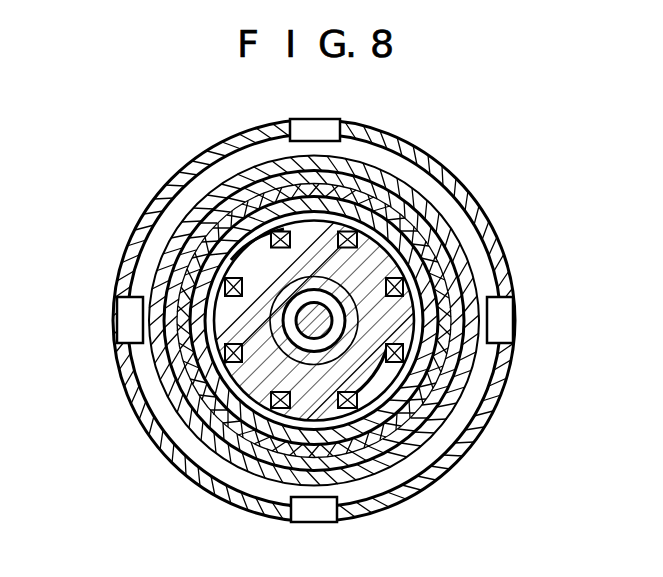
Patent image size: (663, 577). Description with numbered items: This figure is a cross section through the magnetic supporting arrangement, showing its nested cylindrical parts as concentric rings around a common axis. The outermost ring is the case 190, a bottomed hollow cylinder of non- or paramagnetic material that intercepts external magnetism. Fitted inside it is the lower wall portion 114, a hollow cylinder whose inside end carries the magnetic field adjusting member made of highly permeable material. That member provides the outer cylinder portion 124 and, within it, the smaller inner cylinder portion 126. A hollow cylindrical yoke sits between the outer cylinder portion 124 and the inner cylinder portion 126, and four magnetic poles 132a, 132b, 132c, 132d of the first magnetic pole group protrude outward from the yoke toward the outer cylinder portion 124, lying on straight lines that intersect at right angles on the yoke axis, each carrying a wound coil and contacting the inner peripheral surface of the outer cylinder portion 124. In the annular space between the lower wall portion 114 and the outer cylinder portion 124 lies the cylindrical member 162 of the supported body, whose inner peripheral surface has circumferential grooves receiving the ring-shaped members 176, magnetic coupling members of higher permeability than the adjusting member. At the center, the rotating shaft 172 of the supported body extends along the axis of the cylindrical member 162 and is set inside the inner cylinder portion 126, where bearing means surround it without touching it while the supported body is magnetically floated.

The lower wall portion 114 is at (457, 239).
The outer cylinder portion 124 is at (275, 325).
The inner cylinder portion 126 is at (245, 443).
The magnetic pole 132a is at (232, 298).
The magnetic pole 132b is at (289, 410).
The magnetic pole 132c is at (396, 326).
The magnetic pole 132d is at (292, 232).
The cylindrical member 162 is at (430, 388).
The rotating shaft 172 is at (305, 312).
The ring-shaped member 176 is at (397, 410).
The case 190 is at (465, 186).